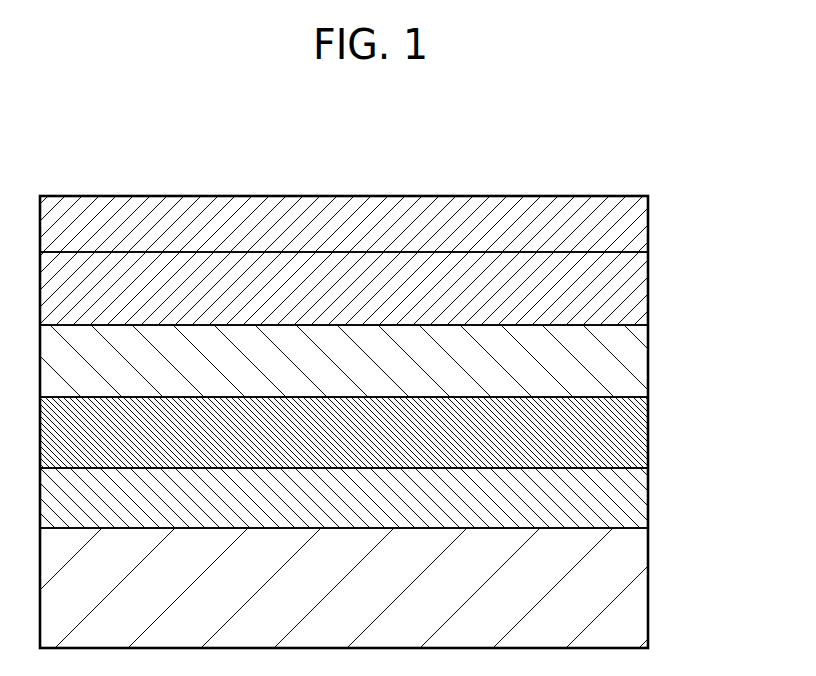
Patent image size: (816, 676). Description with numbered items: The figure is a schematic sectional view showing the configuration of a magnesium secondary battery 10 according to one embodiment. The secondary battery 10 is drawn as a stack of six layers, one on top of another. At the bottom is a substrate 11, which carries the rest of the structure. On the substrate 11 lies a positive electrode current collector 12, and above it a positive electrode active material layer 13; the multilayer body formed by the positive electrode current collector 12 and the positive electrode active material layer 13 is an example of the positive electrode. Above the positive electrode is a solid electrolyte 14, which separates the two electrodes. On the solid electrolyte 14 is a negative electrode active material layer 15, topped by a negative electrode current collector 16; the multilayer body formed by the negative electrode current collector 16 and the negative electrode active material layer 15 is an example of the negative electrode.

The secondary battery 10 is at (638, 120).
The substrate 11 is at (636, 563).
The positive electrode current collector 12 is at (636, 493).
The positive electrode active material layer 13 is at (636, 427).
The solid electrolyte 14 is at (636, 357).
The negative electrode active material layer 15 is at (636, 282).
The negative electrode current collector 16 is at (636, 227).